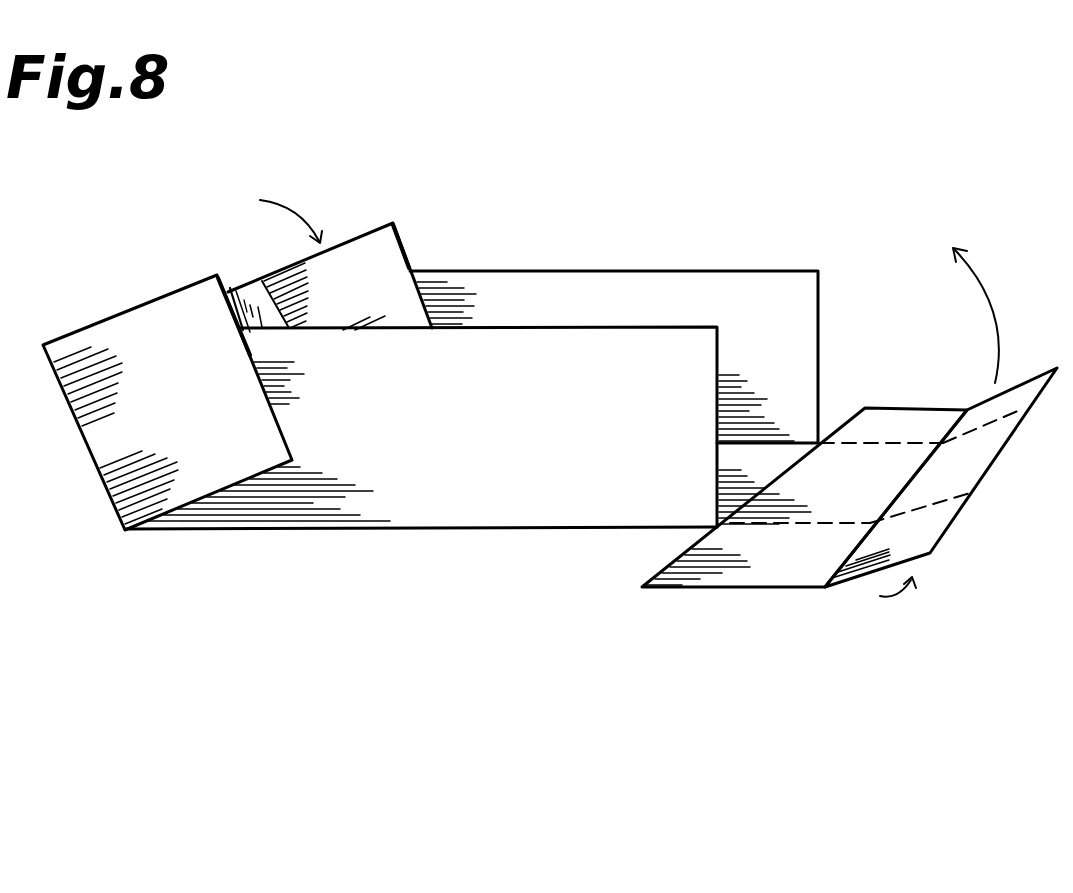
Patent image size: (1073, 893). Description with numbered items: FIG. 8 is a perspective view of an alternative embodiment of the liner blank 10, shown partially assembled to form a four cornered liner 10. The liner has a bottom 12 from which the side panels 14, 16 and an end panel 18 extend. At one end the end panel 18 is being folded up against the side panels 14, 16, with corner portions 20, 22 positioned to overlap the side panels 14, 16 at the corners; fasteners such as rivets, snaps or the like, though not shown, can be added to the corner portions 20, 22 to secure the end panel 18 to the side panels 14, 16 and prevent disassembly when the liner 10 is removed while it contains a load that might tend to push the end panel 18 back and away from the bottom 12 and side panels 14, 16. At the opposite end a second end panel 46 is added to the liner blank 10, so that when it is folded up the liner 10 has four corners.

The liner blank 10 is at (408, 556).
The bottom 12 is at (751, 482).
The side panel 14 is at (620, 390).
The side panel 16 is at (742, 309).
The end panel 18 is at (243, 291).
The corner portion 20 is at (167, 407).
The corner portion 22 is at (348, 305).
The second end panel 46 is at (972, 463).